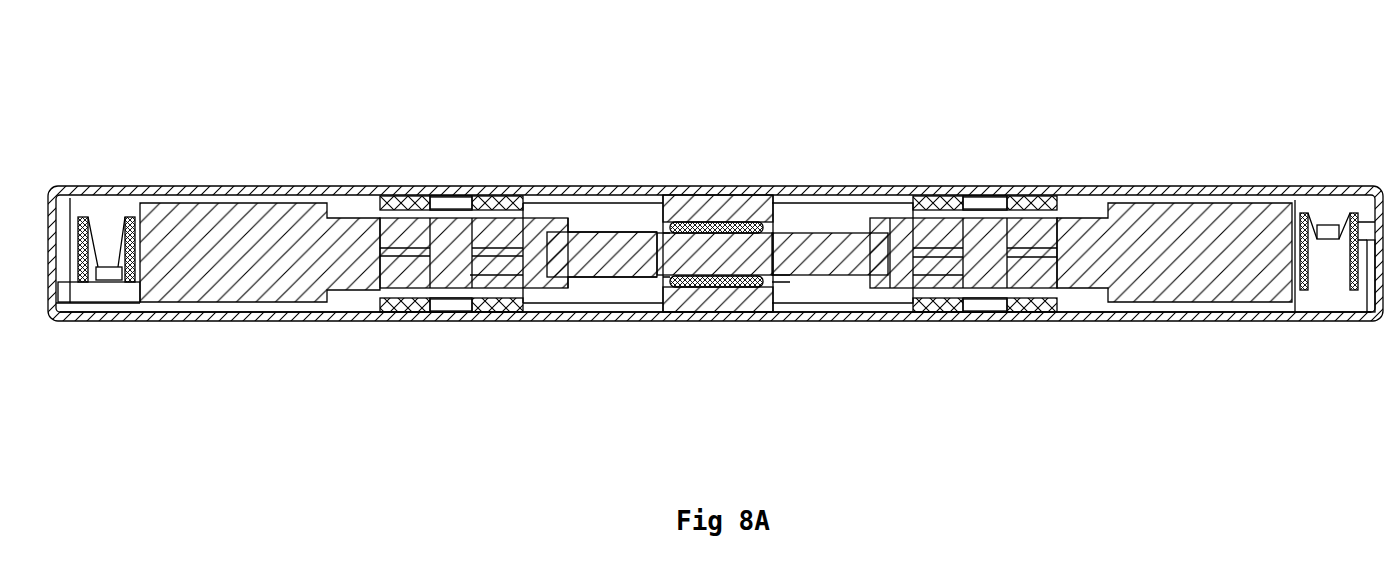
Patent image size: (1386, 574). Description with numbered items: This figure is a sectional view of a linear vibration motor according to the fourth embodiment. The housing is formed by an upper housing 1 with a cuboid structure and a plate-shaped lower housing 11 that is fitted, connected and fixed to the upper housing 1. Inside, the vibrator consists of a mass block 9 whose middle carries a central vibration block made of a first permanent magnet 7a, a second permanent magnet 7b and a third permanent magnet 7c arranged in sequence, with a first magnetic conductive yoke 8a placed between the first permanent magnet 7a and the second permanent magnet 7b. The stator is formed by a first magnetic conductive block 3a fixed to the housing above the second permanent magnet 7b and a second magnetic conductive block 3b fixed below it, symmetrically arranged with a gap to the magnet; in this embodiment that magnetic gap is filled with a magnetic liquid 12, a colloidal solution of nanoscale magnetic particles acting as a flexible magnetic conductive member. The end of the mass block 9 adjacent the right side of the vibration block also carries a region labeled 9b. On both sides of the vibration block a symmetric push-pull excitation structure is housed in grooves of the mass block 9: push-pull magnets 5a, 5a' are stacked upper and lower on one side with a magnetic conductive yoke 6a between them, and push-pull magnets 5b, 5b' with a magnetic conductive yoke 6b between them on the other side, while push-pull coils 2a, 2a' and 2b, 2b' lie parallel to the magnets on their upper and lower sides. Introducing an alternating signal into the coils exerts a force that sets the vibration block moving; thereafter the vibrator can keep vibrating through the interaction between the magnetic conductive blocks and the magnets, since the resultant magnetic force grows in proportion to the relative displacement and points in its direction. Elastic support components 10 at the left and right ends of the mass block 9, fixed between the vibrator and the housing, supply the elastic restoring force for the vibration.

The upper housing 1 is at (1172, 193).
The push-pull coil 2a is at (914, 168).
The push-pull coil 2a' is at (960, 353).
The push-pull coil 2b is at (521, 166).
The push-pull coil 2b' is at (519, 355).
The first magnetic conductive block 3a is at (712, 200).
The second magnetic conductive block 3b is at (710, 300).
The push-pull magnet 5a is at (997, 122).
The push-pull magnet 5a' is at (1017, 363).
The push-pull magnet 5b is at (451, 119).
The push-pull magnet 5b' is at (451, 367).
The magnetic conductive yoke 6a is at (1063, 205).
The magnetic conductive yoke 6b is at (443, 205).
The first permanent magnet 7a is at (598, 240).
The second permanent magnet 7b is at (730, 240).
The third permanent magnet 7c is at (831, 250).
The first magnetic conductive yoke 8a is at (662, 290).
The mass block 9 is at (206, 215).
The weight block end 9b is at (786, 276).
The elastic support component 10 is at (85, 226).
The lower housing 11 is at (1167, 318).
The magnetic liquid 12 is at (766, 298).